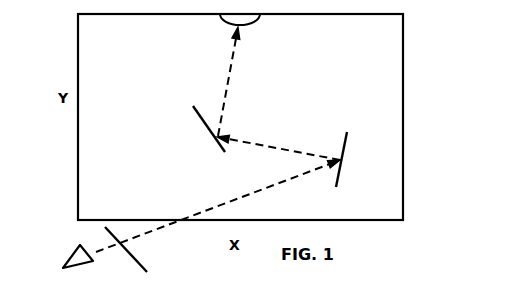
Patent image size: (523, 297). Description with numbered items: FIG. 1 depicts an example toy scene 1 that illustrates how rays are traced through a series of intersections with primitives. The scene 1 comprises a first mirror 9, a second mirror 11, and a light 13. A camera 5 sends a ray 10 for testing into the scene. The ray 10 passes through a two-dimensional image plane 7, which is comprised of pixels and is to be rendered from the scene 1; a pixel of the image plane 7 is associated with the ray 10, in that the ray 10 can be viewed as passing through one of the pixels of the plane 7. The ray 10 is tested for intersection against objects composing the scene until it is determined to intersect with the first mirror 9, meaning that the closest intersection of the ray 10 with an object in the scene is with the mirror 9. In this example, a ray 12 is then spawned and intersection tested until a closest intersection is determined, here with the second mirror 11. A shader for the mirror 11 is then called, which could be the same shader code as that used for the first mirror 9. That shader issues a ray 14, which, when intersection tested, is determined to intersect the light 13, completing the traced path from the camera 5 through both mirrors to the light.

The toy scene 1 is at (412, 139).
The camera 5 is at (68, 256).
The 2-D image plane 7 is at (144, 261).
The first mirror 9 is at (347, 146).
The ray 10 is at (244, 192).
The second mirror 11 is at (208, 132).
The ray 12 is at (306, 150).
The light 13 is at (258, 18).
The ray 14 is at (230, 72).